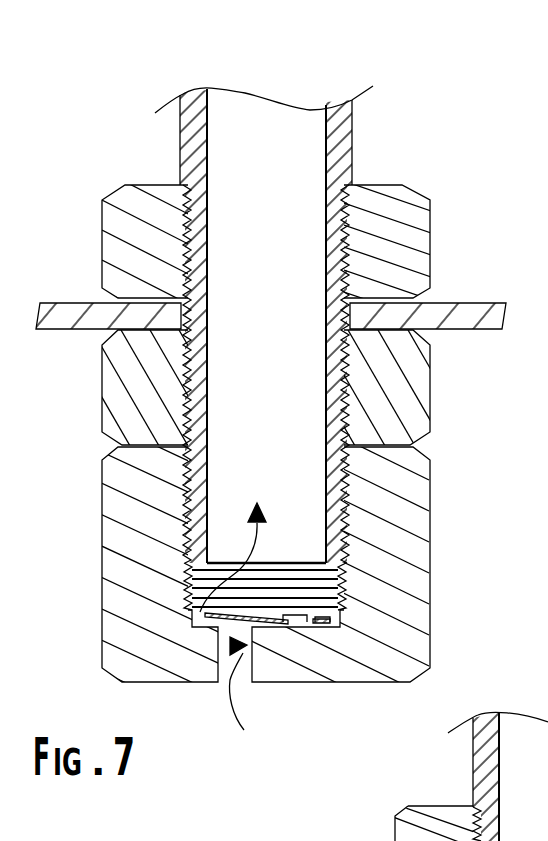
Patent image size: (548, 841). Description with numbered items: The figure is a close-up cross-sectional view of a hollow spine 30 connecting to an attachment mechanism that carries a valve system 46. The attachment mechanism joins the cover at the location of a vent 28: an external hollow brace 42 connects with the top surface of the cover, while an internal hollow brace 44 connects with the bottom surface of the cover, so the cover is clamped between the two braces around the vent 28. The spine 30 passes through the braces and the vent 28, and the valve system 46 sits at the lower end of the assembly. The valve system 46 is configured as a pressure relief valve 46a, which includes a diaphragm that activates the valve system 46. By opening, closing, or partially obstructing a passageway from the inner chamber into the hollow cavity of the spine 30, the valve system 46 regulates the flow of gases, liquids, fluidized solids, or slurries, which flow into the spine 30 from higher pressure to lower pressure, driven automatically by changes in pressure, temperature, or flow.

The spine 30 is at (191, 93).
The external hollow brace 42 is at (402, 185).
The vent 28 is at (181, 305).
The internal hollow brace 44 is at (429, 387).
The valve system 46 is at (429, 575).
The pressure relief valve 46a is at (272, 623).